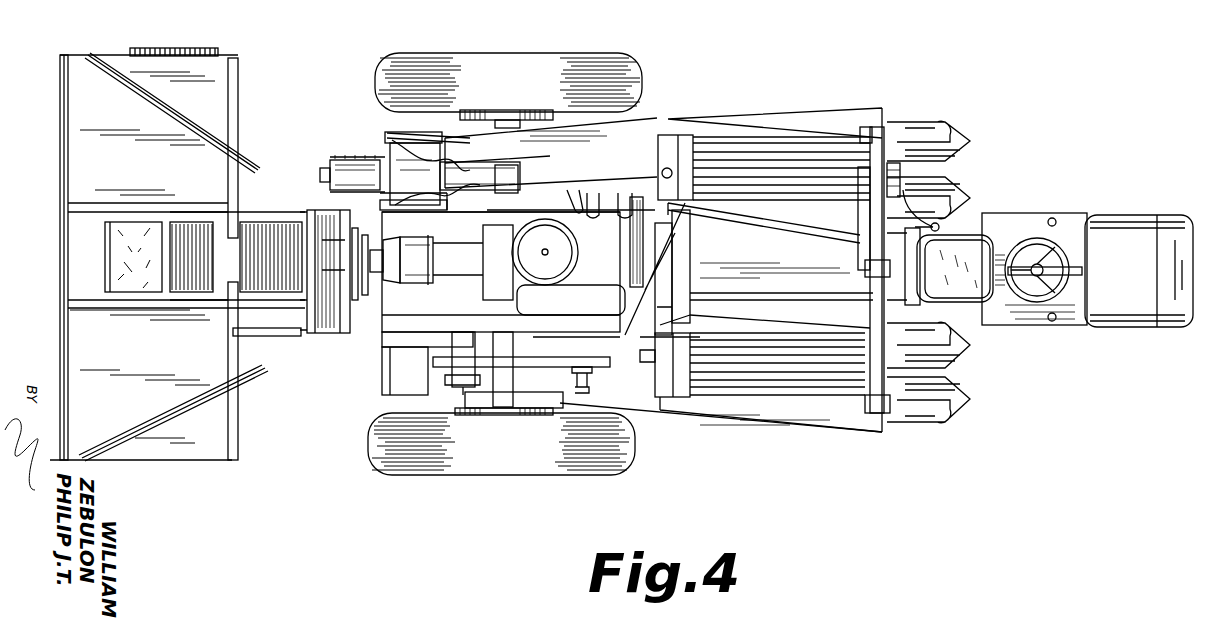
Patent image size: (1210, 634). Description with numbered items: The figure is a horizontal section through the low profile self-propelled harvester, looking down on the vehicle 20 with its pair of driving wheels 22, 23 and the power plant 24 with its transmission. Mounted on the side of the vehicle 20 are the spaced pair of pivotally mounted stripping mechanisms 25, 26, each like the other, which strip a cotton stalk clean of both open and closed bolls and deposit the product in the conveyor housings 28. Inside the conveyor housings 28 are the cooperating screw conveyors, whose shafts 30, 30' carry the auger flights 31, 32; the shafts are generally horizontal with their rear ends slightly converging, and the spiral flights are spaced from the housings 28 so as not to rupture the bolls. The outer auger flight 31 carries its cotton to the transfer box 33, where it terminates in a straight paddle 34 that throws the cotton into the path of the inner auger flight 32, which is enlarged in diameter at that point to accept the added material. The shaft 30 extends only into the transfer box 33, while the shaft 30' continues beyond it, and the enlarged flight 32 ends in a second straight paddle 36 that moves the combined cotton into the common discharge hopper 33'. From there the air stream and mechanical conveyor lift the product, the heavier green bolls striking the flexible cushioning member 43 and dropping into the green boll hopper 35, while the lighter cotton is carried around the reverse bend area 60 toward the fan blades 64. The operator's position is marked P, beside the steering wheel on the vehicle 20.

The vehicle 20 is at (1140, 226).
The driving wheel 22 is at (462, 62).
The driving wheel 23 is at (458, 467).
The power plant 24 is at (497, 274).
The stripping mechanism 25 is at (672, 412).
The stripping mechanism 26 is at (714, 101).
The conveyor housing 28 is at (548, 161).
The shaft 30 is at (413, 161).
The shaft 30' is at (433, 205).
The auger flight 31 is at (462, 141).
The auger flight 32 is at (450, 186).
The transfer box 33 is at (410, 155).
The common discharge hopper 33' is at (337, 161).
The paddle 34 is at (390, 143).
The green boll hopper 35 is at (85, 166).
The paddle 36 is at (340, 185).
The cushioning member 43 is at (138, 222).
The reverse bend area 60 is at (262, 300).
The fan blades 64 is at (322, 215).
The steering wheel / operator position P is at (1075, 248).